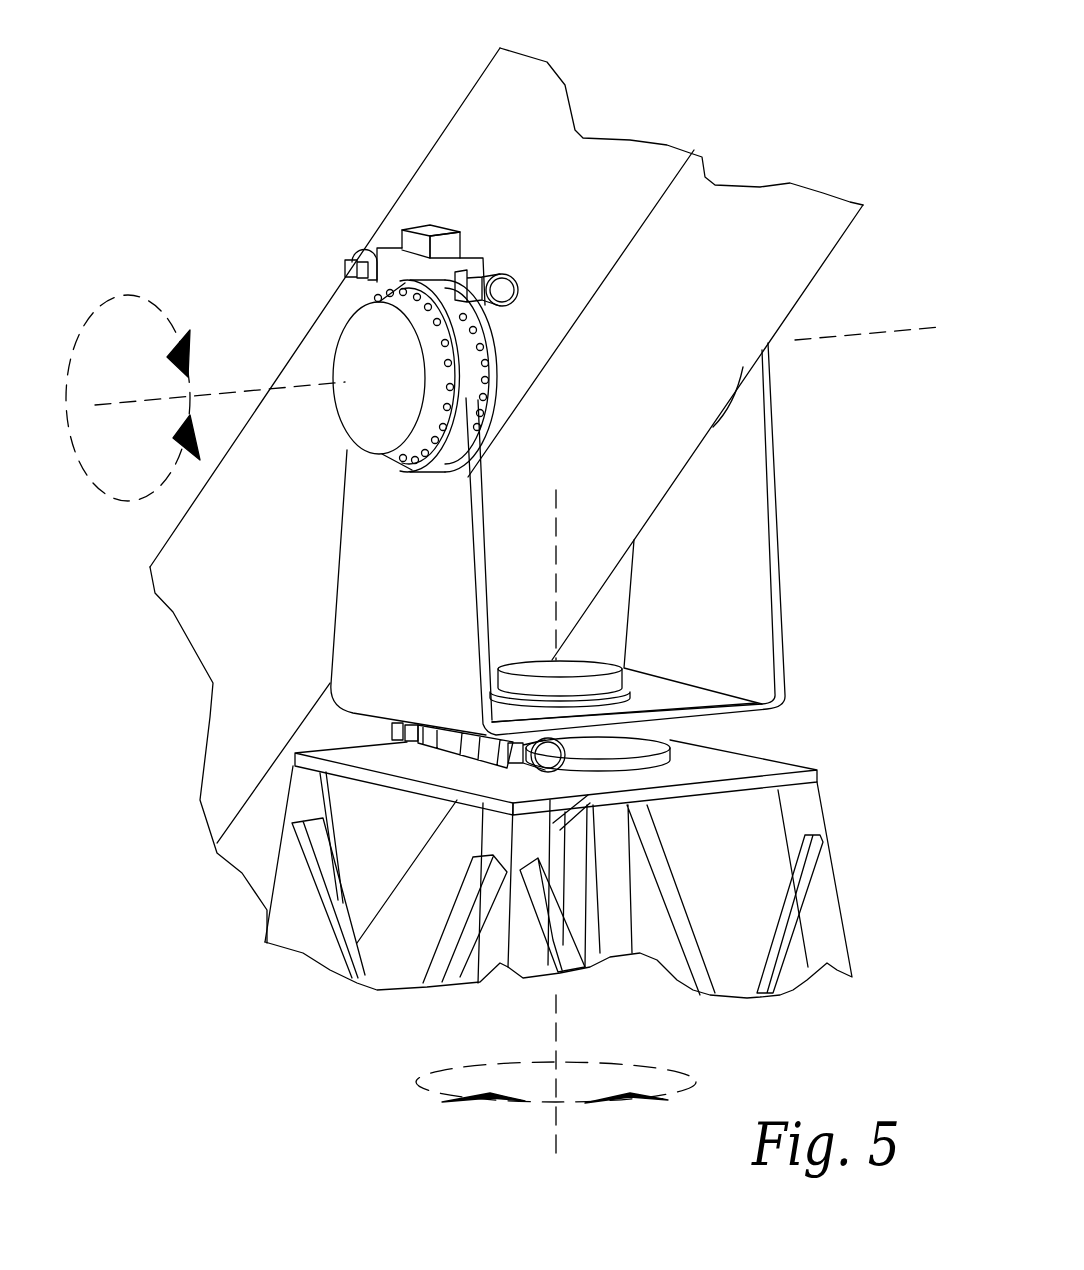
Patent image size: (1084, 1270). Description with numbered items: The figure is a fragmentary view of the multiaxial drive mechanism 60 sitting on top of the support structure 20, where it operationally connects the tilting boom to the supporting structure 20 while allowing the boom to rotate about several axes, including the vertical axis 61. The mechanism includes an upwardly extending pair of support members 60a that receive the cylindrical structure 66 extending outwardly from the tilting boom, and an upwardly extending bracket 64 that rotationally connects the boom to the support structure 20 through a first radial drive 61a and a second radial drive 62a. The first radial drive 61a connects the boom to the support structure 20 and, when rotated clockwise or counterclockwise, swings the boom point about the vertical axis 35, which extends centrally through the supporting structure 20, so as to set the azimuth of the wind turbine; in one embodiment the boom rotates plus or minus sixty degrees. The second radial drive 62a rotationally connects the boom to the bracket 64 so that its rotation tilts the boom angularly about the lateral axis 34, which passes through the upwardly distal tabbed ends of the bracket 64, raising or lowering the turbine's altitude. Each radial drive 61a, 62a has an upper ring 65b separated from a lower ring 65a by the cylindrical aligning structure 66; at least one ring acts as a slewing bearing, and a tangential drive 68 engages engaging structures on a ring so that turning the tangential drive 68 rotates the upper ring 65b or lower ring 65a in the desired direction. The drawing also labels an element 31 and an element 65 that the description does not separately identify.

The support structure 20 is at (275, 798).
The panel 31 is at (503, 93).
The lateral axis 34 is at (83, 320).
The vertical axis 35 is at (580, 1137).
The multiaxial drive mechanism 60 is at (574, 539).
The support members 60a is at (740, 437).
The vertical axis 61 is at (608, 768).
The first radial drive 61a is at (665, 773).
The second radial drive 62a is at (367, 347).
The upwardly extending bracket 64 is at (785, 645).
The rotary actuator 65 is at (422, 457).
The lower ring 65a is at (492, 345).
The upper ring 65b is at (358, 288).
The cylindrical aligning structure 66 is at (443, 452).
The tangential drive 68 is at (403, 267).